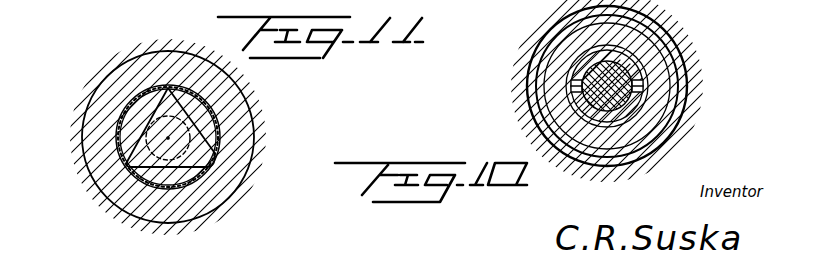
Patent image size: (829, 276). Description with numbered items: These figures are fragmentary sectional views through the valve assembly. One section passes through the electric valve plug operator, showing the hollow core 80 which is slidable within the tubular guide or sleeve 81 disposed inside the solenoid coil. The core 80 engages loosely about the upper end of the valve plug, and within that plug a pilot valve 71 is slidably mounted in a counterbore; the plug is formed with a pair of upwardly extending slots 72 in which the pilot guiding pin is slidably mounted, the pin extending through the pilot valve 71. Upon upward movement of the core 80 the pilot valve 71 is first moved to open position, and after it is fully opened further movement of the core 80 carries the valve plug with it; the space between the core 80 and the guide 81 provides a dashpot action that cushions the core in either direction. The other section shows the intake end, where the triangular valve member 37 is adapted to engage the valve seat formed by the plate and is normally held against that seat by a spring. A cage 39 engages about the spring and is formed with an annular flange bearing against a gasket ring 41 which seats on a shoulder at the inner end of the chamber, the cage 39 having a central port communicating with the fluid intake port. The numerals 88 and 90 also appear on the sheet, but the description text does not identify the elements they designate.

In FIG. 11, the liner sleeve 37 is at (197, 160).
In FIG. 11, the triangular plug 39 is at (222, 129).
In FIG. 11, the housing body 41 is at (235, 177).
In FIG. 10, the shaft 71 is at (617, 101).
In FIG. 10, the key 72 is at (726, 83).
In FIG. 10, the outer casing 80 is at (664, 52).
In FIG. 10, the intermediate ring 81 is at (538, 71).
In FIG. 10, the member 88 is at (519, 4).
In FIG. 10, the member 90 is at (495, 0).